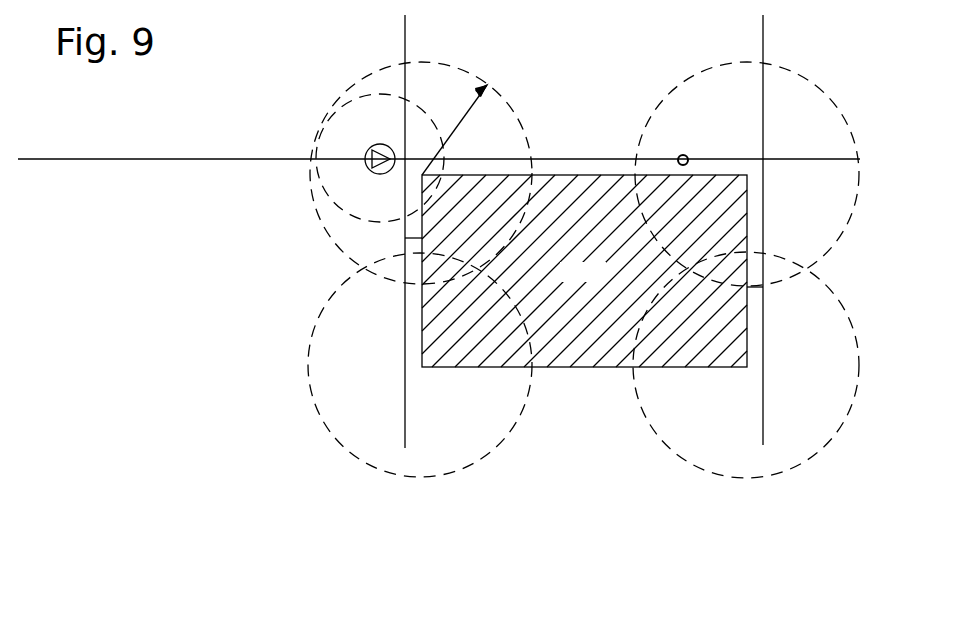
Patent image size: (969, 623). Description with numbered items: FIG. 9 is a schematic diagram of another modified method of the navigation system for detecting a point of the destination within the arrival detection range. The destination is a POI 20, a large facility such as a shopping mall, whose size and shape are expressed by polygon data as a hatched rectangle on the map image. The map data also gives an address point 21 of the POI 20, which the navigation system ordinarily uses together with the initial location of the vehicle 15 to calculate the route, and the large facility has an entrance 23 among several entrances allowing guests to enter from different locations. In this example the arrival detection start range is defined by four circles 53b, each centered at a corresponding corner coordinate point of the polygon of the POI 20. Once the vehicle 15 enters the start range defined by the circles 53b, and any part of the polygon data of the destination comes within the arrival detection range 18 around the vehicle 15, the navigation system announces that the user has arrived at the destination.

The vehicle 15 is at (383, 145).
The arrival detection range 18 is at (368, 95).
The POI (point of interest) 20 is at (567, 367).
The address point 21 is at (688, 155).
The entrance 23 is at (422, 254).
The circles 53b is at (442, 65).